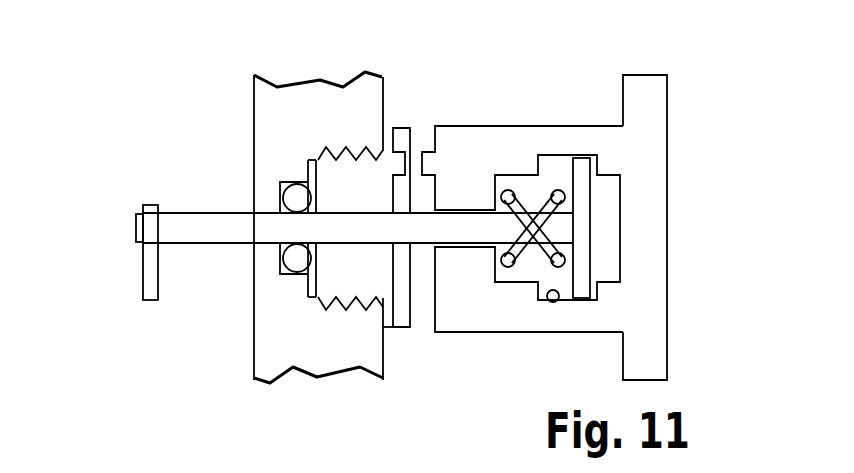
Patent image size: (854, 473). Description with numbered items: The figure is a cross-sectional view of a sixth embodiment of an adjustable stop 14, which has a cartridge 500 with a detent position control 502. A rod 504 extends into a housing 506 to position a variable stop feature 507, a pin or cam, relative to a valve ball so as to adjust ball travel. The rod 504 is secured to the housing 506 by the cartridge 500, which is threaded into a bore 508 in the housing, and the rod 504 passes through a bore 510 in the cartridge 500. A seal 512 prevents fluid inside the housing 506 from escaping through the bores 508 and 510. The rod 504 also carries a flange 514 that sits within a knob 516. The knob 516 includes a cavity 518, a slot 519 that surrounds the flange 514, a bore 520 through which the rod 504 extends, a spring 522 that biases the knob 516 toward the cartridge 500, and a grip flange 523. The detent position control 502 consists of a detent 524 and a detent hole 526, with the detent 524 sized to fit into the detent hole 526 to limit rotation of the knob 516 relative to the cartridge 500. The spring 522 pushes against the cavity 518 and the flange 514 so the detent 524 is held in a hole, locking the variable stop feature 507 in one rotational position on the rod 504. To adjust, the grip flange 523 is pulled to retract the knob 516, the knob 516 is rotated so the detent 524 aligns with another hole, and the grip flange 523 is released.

The adjustable stop 14 is at (159, 332).
The cartridge 500 is at (362, 176).
The detent position control 502 is at (428, 116).
The rod 504 is at (220, 220).
The housing 506 is at (282, 112).
The variable stop feature 507 is at (142, 280).
The bore 508 is at (320, 300).
The bore 510 is at (365, 233).
The seal 512 is at (298, 192).
The flange 514 is at (582, 198).
The knob 516 is at (580, 138).
The cavity 518 is at (605, 251).
The slot 519 is at (548, 303).
The bore 520 is at (451, 212).
The spring 522 is at (508, 264).
The grip flange 523 is at (648, 98).
The detent 524 is at (430, 166).
The detent hole 526 is at (400, 127).